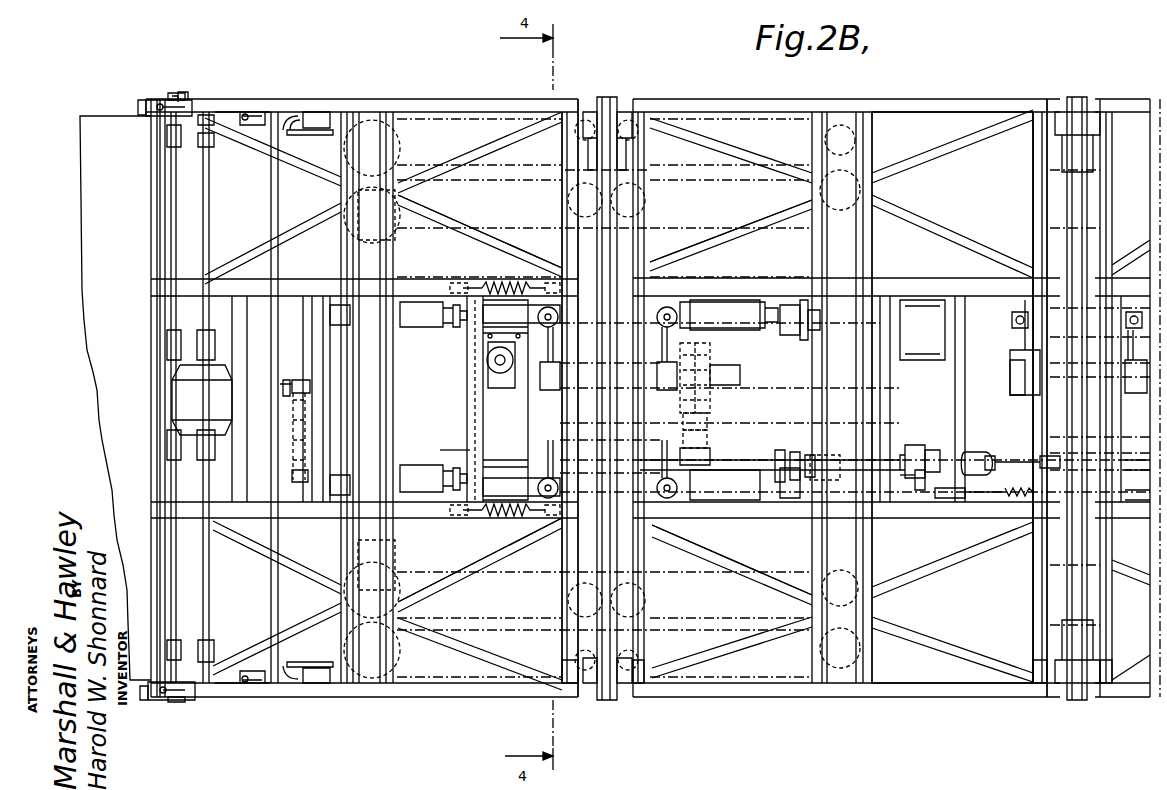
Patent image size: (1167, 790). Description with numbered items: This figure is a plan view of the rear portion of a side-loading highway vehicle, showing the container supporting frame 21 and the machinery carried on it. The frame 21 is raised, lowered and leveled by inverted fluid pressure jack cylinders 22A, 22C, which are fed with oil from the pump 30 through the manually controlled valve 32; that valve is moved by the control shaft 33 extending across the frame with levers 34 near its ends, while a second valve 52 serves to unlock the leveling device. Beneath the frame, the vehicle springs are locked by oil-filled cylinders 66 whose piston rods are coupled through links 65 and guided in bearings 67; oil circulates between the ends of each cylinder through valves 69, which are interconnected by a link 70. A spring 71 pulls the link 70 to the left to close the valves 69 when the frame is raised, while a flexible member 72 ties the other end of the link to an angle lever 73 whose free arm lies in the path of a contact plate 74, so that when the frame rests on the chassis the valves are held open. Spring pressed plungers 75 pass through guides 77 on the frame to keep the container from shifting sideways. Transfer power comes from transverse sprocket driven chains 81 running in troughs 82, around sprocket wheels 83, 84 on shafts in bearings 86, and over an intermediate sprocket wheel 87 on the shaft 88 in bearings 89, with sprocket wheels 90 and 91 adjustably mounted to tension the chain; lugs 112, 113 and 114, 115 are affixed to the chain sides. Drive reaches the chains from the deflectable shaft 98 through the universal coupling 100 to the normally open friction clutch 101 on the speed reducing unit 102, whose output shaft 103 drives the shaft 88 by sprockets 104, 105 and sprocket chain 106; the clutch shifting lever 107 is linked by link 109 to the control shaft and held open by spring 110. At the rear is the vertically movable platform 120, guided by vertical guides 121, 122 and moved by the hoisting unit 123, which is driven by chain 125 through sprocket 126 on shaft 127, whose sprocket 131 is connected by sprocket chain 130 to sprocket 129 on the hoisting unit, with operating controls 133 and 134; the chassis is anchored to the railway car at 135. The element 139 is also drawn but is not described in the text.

The container supporting frame 21 is at (920, 285).
The inverted cylinder 22A is at (358, 553).
The inverted cylinder 22C is at (358, 251).
The pump 30 is at (910, 445).
The manually controlled valve 32 is at (318, 683).
The control shaft 33 is at (271, 199).
The lever 34 is at (254, 112).
The valve 52 is at (318, 112).
The link 65 is at (420, 327).
The cylinder 66 is at (522, 323).
The bearing 67 is at (340, 325).
The valve 69 is at (545, 307).
The link 70 is at (680, 302).
The spring 71 is at (492, 282).
The flexible member 72 is at (785, 305).
The angle lever 73 is at (812, 308).
The contact plate 74 is at (802, 300).
The spring pressed plunger 75 is at (500, 368).
The guide 77 is at (488, 374).
The sprocket driven chain 81 is at (608, 97).
The trough 82 is at (562, 215).
The sprocket wheel 83 is at (1066, 97).
The sprocket wheel 84 is at (1077, 700).
The bearing 86 is at (572, 683).
The sprocket wheel 87 is at (1030, 410).
The shaft 88 is at (726, 378).
The bearing 89 is at (1136, 393).
The sprocket wheel 90 is at (1040, 462).
The sprocket wheel 91 is at (1015, 336).
The deflectable shaft 98 is at (1137, 455).
The universal coupling 100 is at (985, 452).
The friction clutch 101 is at (915, 500).
The speed reducing unit 102 is at (842, 455).
The output shaft 103 is at (755, 460).
The sprocket 104 is at (710, 462).
The sprocket 105 is at (712, 413).
The sprocket chain 106 is at (712, 433).
The clutch shifting lever 107 is at (945, 500).
The link 109 is at (1139, 487).
The spring 110 is at (1018, 500).
The lug 112 is at (560, 530).
The lug 113 is at (652, 535).
The lug 114 is at (560, 262).
The lug 115 is at (655, 262).
The vertically movable platform 120 is at (82, 300).
The vertical guide 121 is at (190, 700).
The vertical guide 122 is at (190, 100).
The hoisting unit 123 is at (202, 400).
The chain 125 is at (932, 450).
The sprocket 126 is at (905, 500).
The shaft 127 is at (445, 465).
The sprocket 129 is at (300, 482).
The sprocket chain 130 is at (293, 432).
The sprocket 131 is at (300, 380).
The operating control 133 is at (145, 100).
The operating control 134 is at (168, 95).
The anchoring point 135 is at (341, 205).
The box 139 is at (935, 340).